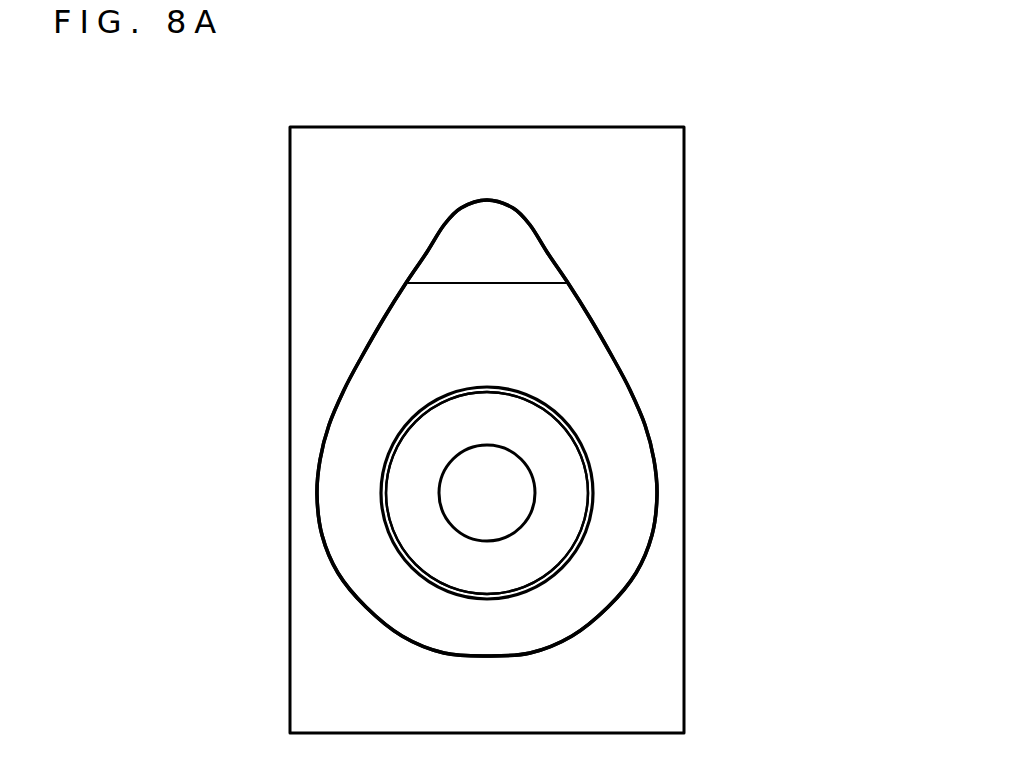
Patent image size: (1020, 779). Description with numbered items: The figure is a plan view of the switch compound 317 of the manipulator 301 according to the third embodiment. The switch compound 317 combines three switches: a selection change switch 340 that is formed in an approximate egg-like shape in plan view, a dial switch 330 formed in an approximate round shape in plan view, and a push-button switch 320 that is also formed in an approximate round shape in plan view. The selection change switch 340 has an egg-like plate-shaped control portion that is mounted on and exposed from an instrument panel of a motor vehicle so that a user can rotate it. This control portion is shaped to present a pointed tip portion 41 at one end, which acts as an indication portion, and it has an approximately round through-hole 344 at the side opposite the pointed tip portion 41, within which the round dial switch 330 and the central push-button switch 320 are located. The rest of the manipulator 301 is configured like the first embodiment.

The pointed tip portion 41 is at (497, 220).
The manipulator 301 is at (708, 226).
The switch compound 317 is at (622, 355).
The push-button switch 320 is at (516, 501).
The dial switch 330 is at (542, 548).
The selection change switch 340 is at (635, 460).
The through-hole 344 is at (398, 447).